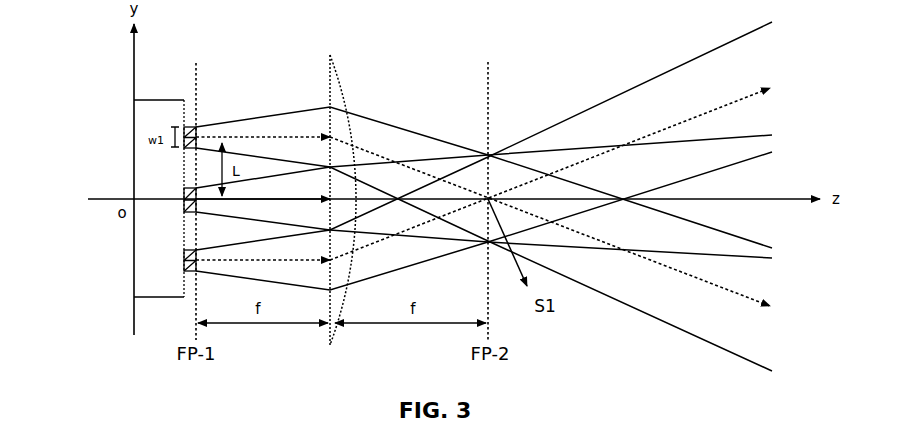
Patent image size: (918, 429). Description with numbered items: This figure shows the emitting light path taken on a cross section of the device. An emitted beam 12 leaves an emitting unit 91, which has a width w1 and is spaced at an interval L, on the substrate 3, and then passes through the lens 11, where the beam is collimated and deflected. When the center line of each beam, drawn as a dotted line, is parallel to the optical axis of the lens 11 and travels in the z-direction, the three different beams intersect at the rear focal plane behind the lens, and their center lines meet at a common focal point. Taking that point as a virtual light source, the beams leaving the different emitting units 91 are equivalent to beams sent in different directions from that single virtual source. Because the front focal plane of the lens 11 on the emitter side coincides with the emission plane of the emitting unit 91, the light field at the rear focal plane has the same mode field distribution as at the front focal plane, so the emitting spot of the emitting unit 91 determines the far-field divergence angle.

The substrate 3 is at (134, 130).
The emitting unit 91 is at (196, 127).
The emitted beam 12 is at (262, 137).
The lens 11 is at (345, 135).